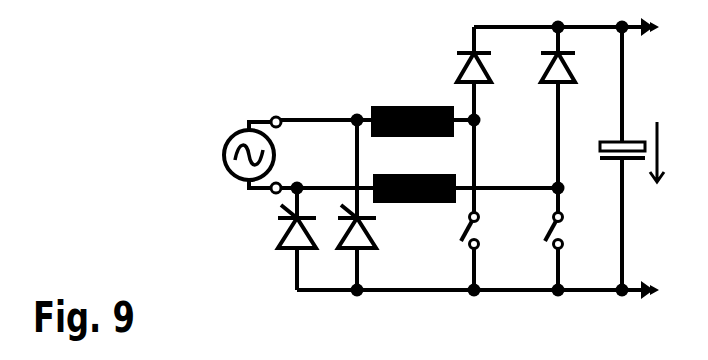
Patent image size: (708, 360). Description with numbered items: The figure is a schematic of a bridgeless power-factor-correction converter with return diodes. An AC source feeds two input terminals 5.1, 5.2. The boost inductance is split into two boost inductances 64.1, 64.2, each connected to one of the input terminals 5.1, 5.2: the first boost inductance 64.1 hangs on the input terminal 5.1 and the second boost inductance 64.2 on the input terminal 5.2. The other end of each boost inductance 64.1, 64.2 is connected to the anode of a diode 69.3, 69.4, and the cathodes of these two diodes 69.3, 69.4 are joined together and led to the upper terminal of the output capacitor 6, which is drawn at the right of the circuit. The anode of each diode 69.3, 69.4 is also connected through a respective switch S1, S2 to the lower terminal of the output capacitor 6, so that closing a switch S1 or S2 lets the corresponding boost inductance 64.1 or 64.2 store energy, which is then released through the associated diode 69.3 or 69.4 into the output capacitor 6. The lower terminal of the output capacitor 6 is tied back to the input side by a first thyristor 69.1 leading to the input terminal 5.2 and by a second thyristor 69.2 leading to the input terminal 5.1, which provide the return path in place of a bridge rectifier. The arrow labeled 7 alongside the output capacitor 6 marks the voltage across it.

The input terminal 5.1 is at (272, 117).
The input terminal 5.2 is at (268, 193).
The boost inductance 64.1 is at (423, 107).
The boost inductance 64.2 is at (441, 174).
The first thyristor 69.1 is at (283, 244).
The second thyristor 69.2 is at (372, 232).
The diode 69.3 is at (463, 64).
The diode 69.4 is at (575, 68).
The output capacitor 6 is at (633, 140).
The output voltage 7 is at (658, 150).
The switch S1 is at (478, 226).
The switch S2 is at (565, 226).